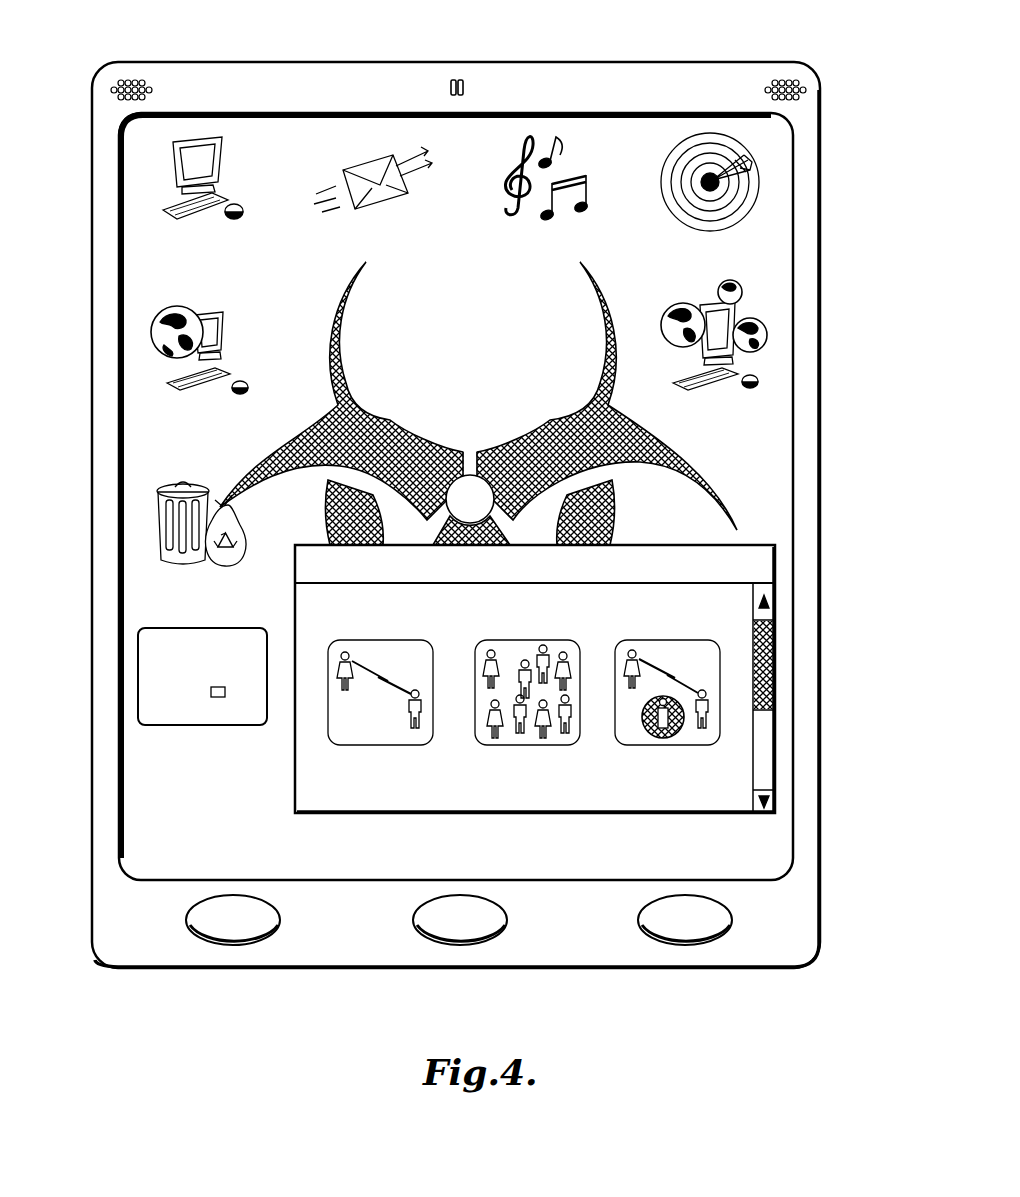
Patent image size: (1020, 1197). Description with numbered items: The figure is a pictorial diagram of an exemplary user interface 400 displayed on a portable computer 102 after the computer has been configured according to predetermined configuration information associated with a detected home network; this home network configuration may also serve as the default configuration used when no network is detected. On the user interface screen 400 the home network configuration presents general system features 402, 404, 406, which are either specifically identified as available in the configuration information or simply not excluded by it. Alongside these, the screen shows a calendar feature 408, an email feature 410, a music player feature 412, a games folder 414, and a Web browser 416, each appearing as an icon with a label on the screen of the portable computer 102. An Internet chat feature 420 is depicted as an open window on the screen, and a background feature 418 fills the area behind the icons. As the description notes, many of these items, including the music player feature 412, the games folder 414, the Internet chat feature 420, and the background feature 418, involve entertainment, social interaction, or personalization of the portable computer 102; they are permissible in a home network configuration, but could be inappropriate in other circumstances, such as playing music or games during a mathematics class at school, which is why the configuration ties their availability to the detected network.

The portable computer 102 is at (203, 62).
The user interface 400 is at (270, 139).
The general system feature 402 is at (172, 173).
The general system feature 404 is at (173, 365).
The general system feature 406 is at (160, 497).
The calendar feature 408 is at (148, 645).
The email feature 410 is at (373, 157).
The music player feature 412 is at (555, 133).
The games folder 414 is at (722, 132).
The Web browser 416 is at (750, 313).
The background feature 418 is at (712, 477).
The Internet chat feature 420 is at (743, 562).